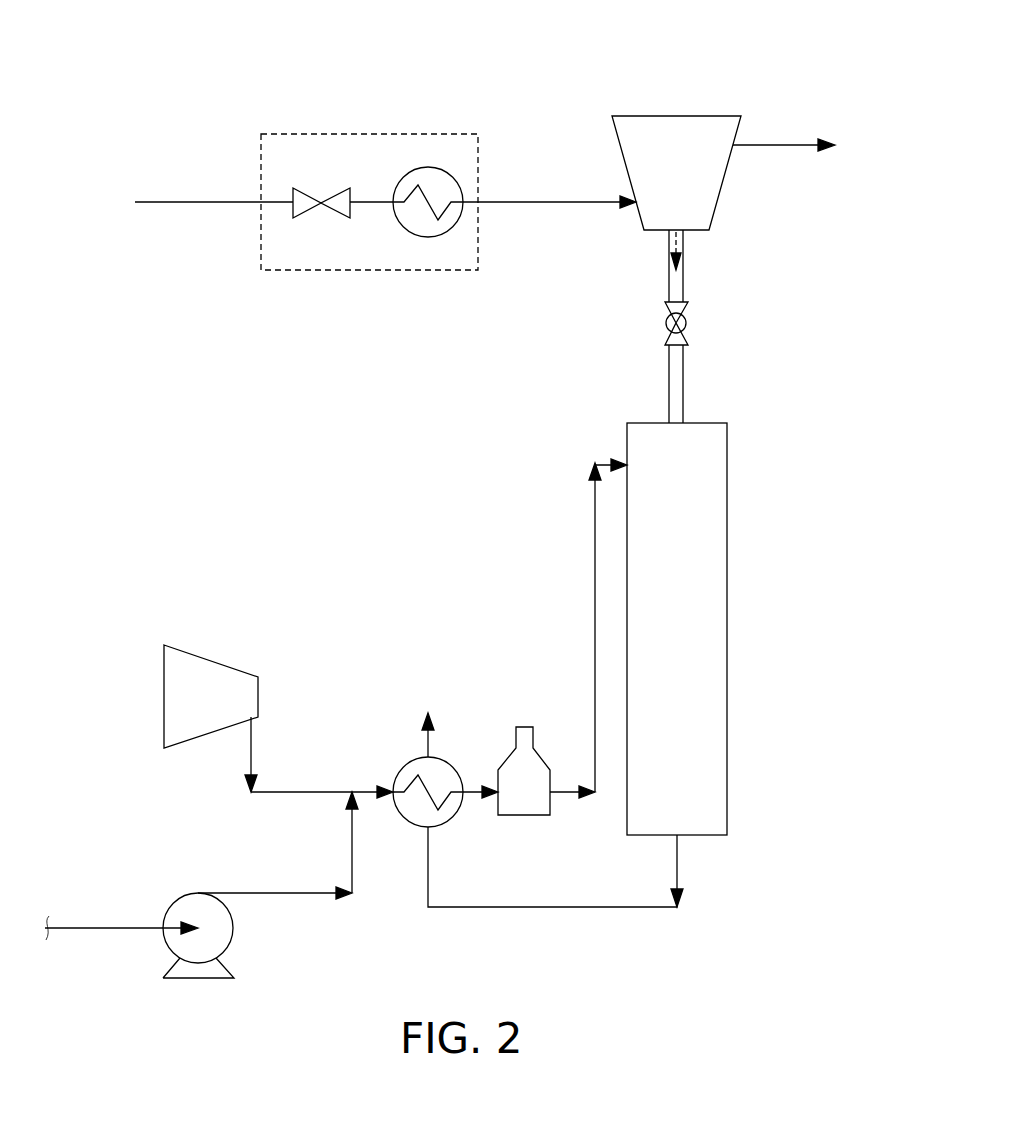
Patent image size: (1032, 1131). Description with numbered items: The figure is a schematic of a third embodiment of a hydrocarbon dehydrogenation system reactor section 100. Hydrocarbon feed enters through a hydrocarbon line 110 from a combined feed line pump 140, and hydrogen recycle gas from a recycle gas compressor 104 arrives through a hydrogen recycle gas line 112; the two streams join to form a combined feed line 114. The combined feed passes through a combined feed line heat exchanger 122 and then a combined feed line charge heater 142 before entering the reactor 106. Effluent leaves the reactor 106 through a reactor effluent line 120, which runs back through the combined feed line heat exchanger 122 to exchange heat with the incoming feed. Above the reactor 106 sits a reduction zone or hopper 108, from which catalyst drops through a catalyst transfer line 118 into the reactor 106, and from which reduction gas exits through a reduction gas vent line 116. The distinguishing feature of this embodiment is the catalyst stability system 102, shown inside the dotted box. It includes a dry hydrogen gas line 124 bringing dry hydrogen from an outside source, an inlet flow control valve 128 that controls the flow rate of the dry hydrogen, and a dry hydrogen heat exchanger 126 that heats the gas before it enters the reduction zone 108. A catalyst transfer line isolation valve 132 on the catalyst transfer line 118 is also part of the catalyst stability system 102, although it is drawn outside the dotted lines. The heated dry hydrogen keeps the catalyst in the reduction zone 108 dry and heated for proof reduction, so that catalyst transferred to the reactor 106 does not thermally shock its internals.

The hydrocarbon dehydrogenation system reactor section 100 is at (820, 52).
The catalyst stability system 102 is at (278, 128).
The recycle gas compressor 104 is at (163, 673).
The reactor 106 is at (712, 423).
The reduction zone 108 is at (725, 115).
The hydrocarbon line 110 is at (274, 896).
The hydrogen recycle gas line 112 is at (289, 795).
The combined feed line 114 is at (593, 539).
The reduction gas vent line 116 is at (806, 143).
The catalyst transfer line 118 is at (668, 384).
The reactor effluent line 120 is at (553, 908).
The combined feed line heat exchanger 122 is at (406, 762).
The dry hydrogen gas line 124 is at (156, 198).
The dry hydrogen heat exchanger 126 is at (421, 168).
The inlet flow control valve 128 is at (301, 188).
The catalyst transfer line isolation valve 132 is at (663, 322).
The combined feed line pump 140 is at (179, 897).
The combined feed line charge heater 142 is at (525, 726).